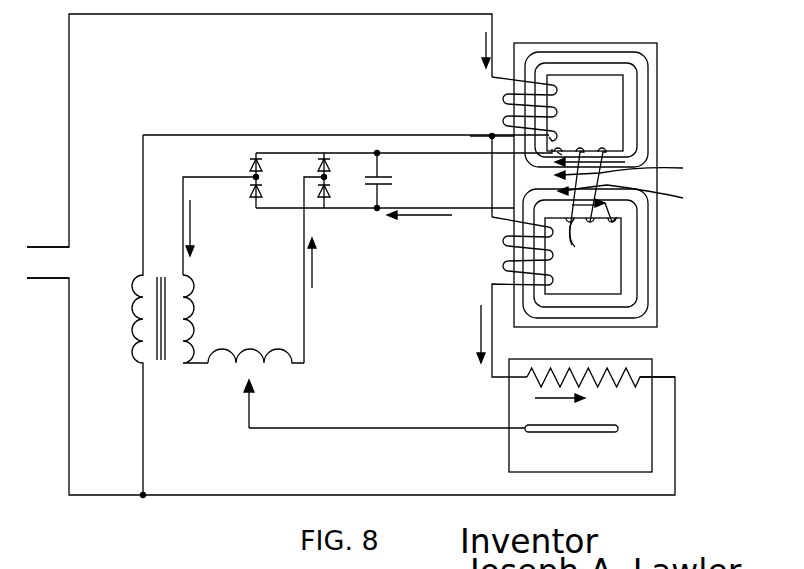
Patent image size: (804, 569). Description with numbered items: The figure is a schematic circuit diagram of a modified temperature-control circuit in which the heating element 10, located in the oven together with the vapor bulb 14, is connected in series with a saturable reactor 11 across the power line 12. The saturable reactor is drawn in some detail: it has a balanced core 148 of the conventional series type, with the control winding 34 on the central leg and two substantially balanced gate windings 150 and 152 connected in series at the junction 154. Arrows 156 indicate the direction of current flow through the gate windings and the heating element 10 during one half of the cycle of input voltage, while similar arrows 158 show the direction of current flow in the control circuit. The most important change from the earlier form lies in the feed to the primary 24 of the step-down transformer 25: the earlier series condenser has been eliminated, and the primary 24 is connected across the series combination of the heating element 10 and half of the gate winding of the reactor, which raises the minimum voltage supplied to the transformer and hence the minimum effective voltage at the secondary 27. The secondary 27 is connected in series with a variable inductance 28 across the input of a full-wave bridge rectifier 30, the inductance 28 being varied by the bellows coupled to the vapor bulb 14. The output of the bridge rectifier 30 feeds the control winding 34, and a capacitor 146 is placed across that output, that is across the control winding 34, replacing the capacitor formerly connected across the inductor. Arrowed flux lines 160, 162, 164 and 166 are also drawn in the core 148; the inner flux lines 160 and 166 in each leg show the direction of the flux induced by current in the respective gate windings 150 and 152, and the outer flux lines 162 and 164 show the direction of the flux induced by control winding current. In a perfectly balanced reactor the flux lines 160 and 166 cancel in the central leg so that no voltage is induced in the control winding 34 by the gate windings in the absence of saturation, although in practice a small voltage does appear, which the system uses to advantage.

The heating element 10 is at (580, 375).
The saturable reactor 11 is at (664, 153).
The power line 12 is at (43, 262).
The vapor bulb 14 is at (565, 433).
The primary 24 is at (148, 318).
The step-down transformer 25 is at (133, 297).
The secondary 27 is at (180, 298).
The variable inductance 28 is at (268, 358).
The full-wave bridge rectifier 30 is at (298, 181).
The control winding 34 is at (616, 115).
The capacitor 146 is at (365, 177).
The balanced core 148 is at (657, 200).
The gate winding 150 is at (554, 108).
The gate winding 152 is at (549, 262).
The series connection point 154 is at (492, 136).
The current arrows 156 is at (484, 48).
The control circuit current arrows 158 is at (312, 265).
The inner flux line 160 is at (583, 142).
The outer flux line 162 is at (612, 133).
The outer flux line 164 is at (637, 185).
The inner flux line 166 is at (581, 205).